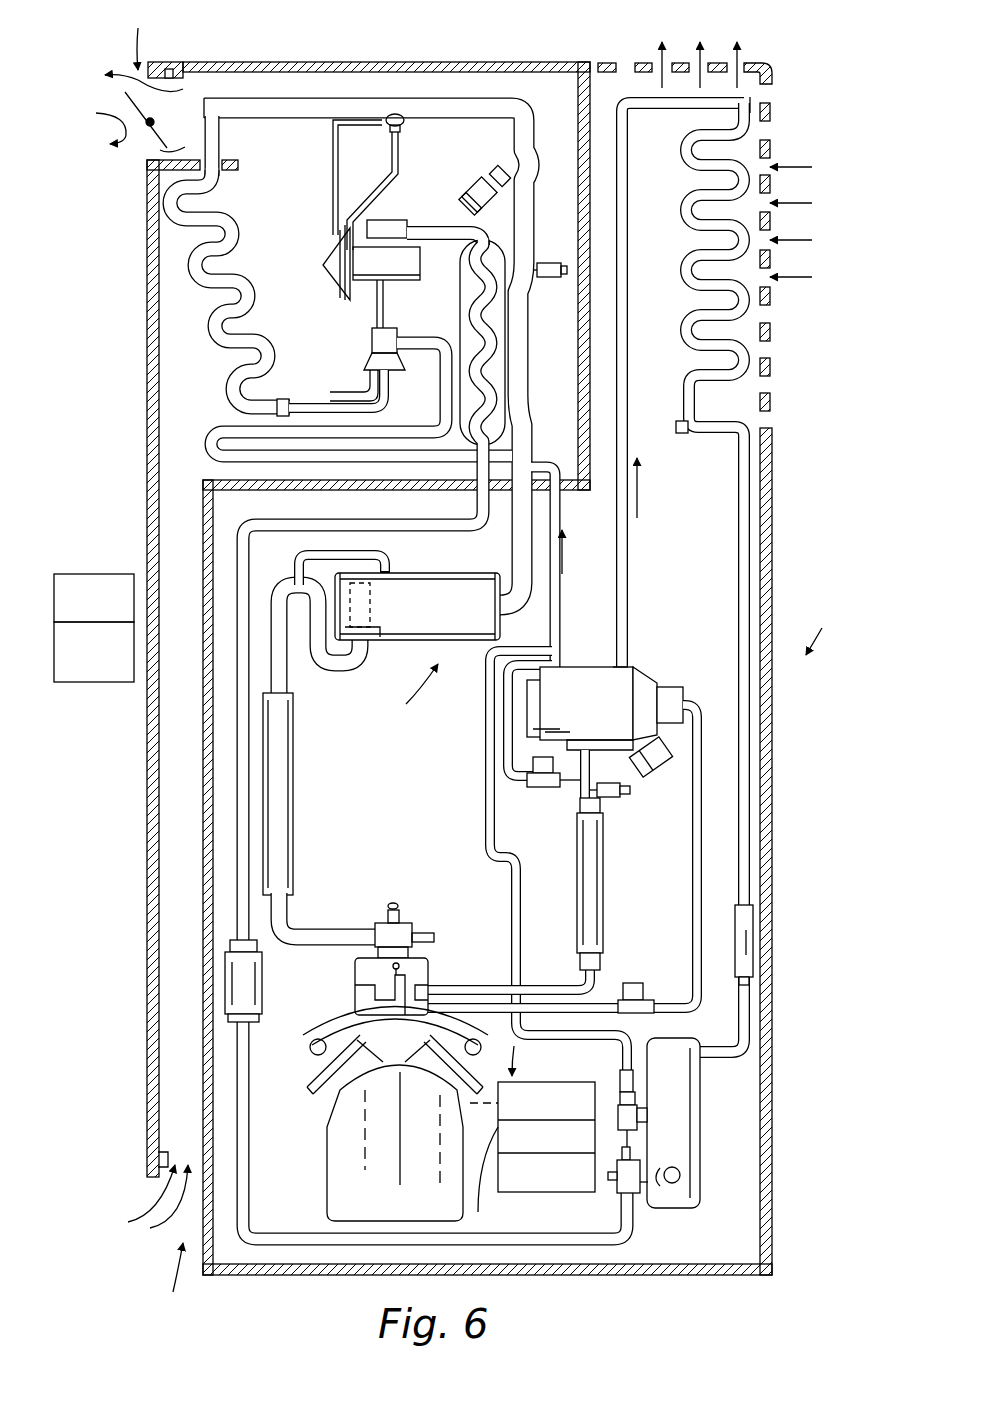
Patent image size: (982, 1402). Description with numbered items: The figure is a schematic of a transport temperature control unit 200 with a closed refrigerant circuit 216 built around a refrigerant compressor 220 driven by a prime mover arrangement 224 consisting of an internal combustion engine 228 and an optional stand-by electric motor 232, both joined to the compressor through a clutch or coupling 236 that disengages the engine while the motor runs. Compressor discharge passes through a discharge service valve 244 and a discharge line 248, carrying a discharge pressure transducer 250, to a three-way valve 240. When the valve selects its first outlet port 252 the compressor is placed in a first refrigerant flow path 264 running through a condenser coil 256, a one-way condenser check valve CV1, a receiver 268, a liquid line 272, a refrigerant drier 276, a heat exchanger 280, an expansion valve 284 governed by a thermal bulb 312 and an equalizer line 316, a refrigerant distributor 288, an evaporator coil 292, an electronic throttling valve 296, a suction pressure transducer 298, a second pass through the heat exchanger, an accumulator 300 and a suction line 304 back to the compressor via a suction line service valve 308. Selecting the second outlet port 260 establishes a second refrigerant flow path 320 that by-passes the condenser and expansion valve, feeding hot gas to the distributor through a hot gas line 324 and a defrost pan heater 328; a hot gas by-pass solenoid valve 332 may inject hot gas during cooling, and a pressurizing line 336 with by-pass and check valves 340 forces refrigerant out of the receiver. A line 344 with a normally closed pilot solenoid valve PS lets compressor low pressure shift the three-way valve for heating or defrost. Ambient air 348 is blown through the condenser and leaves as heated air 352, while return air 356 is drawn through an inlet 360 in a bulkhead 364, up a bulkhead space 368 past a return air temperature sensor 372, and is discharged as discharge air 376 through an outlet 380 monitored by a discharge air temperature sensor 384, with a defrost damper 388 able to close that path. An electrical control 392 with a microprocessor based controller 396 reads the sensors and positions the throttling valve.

The temperature control unit 200 is at (831, 624).
The closed fluid refrigerant circuit 216 is at (405, 699).
The refrigerant compressor 220 is at (330, 1148).
The prime mover arrangement 224 is at (532, 1114).
The internal combustion engine 228 is at (505, 1190).
The stand-by electric motor 232 is at (575, 1072).
The clutch or coupling 236 is at (487, 1152).
The three-way valve 240 is at (648, 665).
The discharge service valve 244 is at (360, 968).
The discharge line 248 is at (455, 985).
The discharge pressure transducer 250 is at (632, 797).
The first outlet port 252 is at (630, 664).
The condenser coil 256 is at (688, 222).
The second outlet port 260 is at (562, 665).
The first refrigerant flow path 264 is at (640, 494).
The receiver 268 is at (700, 1072).
The liquid line 272 is at (628, 1238).
The refrigerant drier 276 is at (262, 1005).
The heat exchanger 280 is at (509, 372).
The expansion valve 284 is at (335, 275).
The refrigerant distributor 288 is at (370, 343).
The evaporator coil 292 is at (236, 275).
The electronic throttling valve 296 is at (474, 183).
The suction pressure transducer 298 is at (560, 263).
The accumulator 300 is at (430, 585).
The suction line 304 is at (335, 918).
The suction line service valve 308 is at (430, 905).
The thermal bulb 312 is at (360, 122).
The equalizer line 316 is at (398, 148).
The second refrigerant flow path 320 is at (562, 557).
The hot gas line 324 is at (561, 505).
The defrost pan heater 328 is at (205, 440).
The hot gas by-pass solenoid valve 332 is at (535, 787).
The by-pass or pressurizing line 336 is at (484, 792).
The by-pass and check valves 340 is at (640, 1120).
The conduit or line 344 is at (693, 875).
The ambient air 348 is at (812, 167).
The heated air 352 is at (727, 58).
The return air 356 is at (140, 1206).
The inlet 360 is at (162, 1282).
The bulkhead 364 is at (158, 935).
The bulkhead space 368 is at (160, 780).
The return air temperature sensor 372 is at (152, 1150).
The discharge air 376 is at (121, 113).
The outlet 380 is at (142, 35).
The discharge air temperature sensor 384 is at (173, 72).
The defrost damper 388 is at (203, 126).
The electrical control 392 is at (90, 683).
The microprocessor based controller 396 is at (68, 580).
The one-way condenser check valve CV1 is at (752, 932).
The pilot solenoid valve PS is at (638, 985).